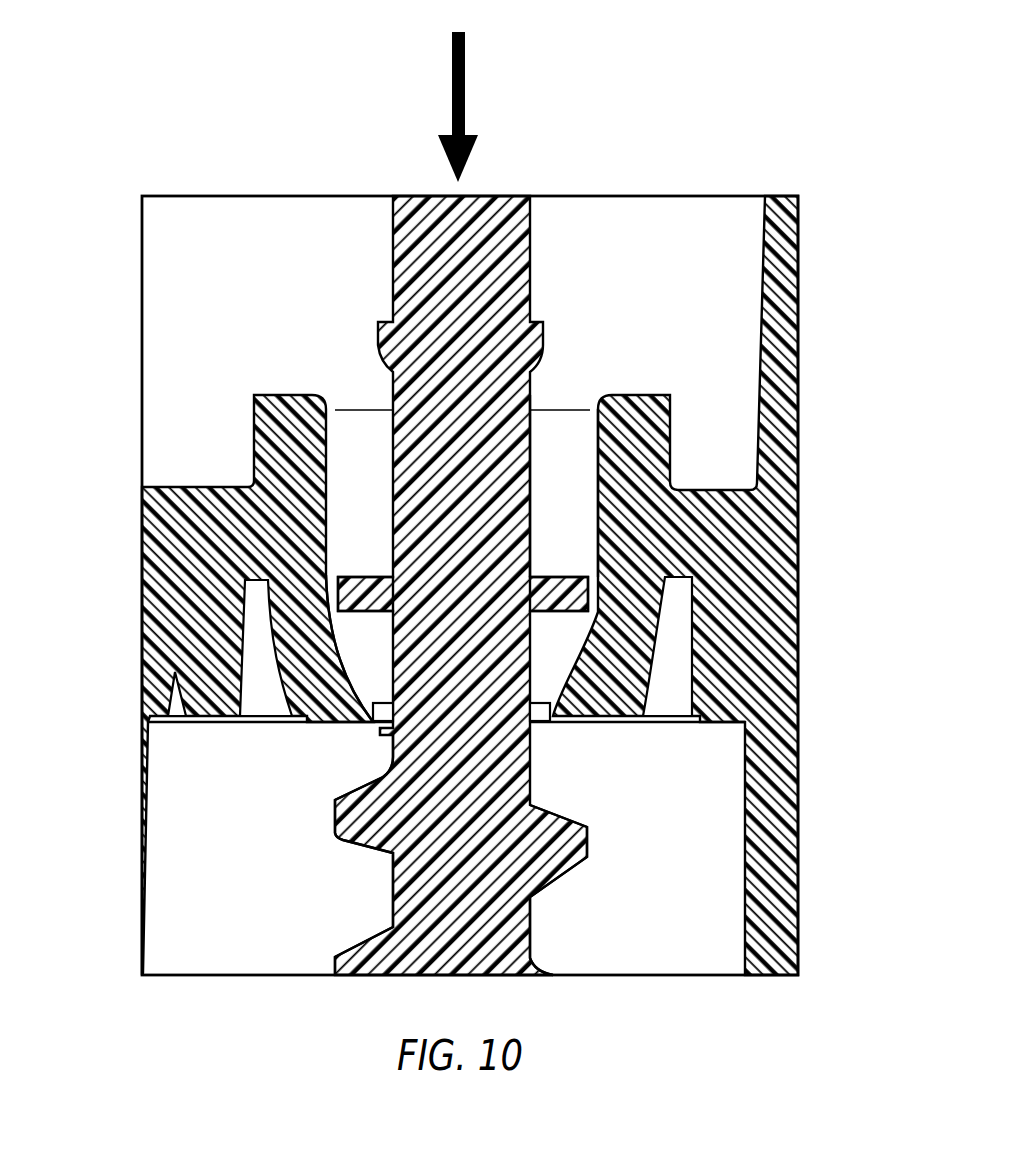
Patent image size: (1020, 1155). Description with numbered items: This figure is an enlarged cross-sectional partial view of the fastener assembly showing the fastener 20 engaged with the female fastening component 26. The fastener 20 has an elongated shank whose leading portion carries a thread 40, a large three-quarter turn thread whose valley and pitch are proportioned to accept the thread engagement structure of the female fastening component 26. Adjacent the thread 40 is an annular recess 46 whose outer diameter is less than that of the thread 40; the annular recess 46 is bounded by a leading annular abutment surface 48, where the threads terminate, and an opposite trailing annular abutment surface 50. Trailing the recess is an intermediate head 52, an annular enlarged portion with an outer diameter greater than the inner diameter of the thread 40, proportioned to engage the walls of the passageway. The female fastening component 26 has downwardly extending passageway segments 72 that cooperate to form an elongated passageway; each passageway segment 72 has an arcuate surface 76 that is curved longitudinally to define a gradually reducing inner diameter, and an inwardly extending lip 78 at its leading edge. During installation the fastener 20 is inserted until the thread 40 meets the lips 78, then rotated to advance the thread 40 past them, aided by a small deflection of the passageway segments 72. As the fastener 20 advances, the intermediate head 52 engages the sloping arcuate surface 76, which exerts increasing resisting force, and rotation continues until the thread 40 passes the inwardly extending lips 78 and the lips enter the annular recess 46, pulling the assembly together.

The fastener 20 is at (453, 250).
The female fastening component 26 is at (129, 528).
The thread 40 is at (368, 840).
The annular recess 46 is at (530, 752).
The leading annular abutment surface 48 is at (383, 733).
The trailing annular abutment surface 50 is at (342, 614).
The intermediate head 52 is at (345, 578).
The passageway segments 72 is at (465, 80).
The arcuate surface 76 is at (576, 524).
The inwardly extending lip 78 is at (383, 703).